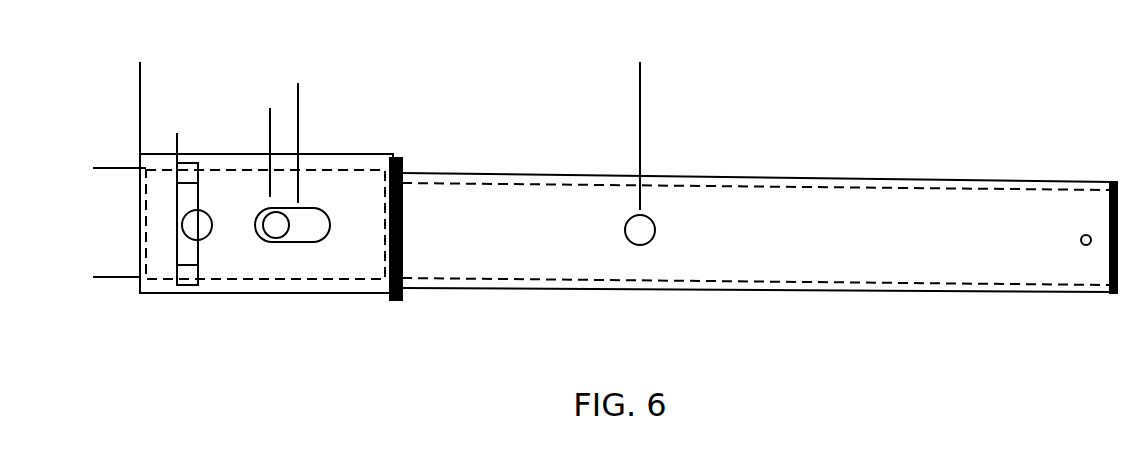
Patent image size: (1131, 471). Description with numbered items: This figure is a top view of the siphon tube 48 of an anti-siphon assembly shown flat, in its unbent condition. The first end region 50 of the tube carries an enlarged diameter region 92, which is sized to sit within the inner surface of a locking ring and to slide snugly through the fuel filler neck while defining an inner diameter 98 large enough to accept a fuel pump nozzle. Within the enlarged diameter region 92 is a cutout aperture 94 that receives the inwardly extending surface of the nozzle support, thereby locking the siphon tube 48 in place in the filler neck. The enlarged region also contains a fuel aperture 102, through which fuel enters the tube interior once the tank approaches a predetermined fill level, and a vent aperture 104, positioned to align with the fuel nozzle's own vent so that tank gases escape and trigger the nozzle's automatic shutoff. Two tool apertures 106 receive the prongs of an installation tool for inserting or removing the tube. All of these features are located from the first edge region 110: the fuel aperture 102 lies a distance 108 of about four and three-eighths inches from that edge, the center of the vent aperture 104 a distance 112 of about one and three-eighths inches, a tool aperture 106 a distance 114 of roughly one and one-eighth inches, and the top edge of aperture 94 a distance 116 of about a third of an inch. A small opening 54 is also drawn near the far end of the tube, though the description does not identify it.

The siphon tube 48 is at (857, 200).
The first end region 50 is at (427, 192).
The small hole 54 is at (1086, 258).
The enlarged diameter region 92 is at (357, 177).
The aperture 94 is at (177, 255).
The inner diameter 98 is at (93, 178).
The fuel aperture 102 is at (657, 213).
The vent aperture 104 is at (298, 247).
The tool apertures 106 is at (217, 212).
The distance 108 is at (630, 62).
The first edge region 110 is at (140, 156).
The distance 112 is at (150, 83).
The distance 114 is at (260, 108).
The distance 116 is at (187, 135).